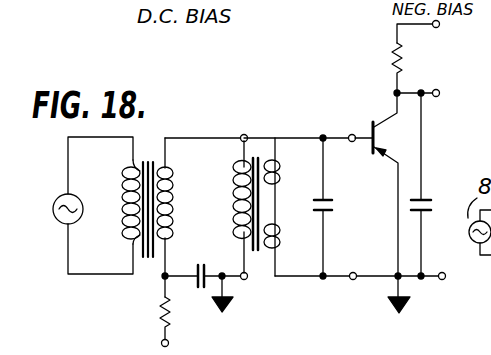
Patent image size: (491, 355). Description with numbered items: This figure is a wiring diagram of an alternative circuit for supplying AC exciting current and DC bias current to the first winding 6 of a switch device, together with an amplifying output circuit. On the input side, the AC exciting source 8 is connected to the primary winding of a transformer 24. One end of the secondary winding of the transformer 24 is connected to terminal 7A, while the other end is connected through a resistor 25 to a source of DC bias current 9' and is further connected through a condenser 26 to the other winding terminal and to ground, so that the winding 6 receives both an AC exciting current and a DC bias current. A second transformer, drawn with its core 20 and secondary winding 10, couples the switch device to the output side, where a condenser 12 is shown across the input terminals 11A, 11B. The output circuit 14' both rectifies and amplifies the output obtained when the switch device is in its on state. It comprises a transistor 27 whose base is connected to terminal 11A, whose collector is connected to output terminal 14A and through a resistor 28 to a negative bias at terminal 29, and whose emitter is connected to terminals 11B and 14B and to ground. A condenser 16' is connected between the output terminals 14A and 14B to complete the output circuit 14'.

The AC exciting source 8 is at (62, 222).
The transformer 24 is at (152, 157).
The resistor 25 is at (161, 313).
The source of DC bias current 9' is at (147, 342).
The terminal 7A is at (253, 116).
The transformer core 20 is at (263, 152).
The first winding 6 is at (237, 197).
The condenser 26 is at (206, 264).
The secondary winding 10 is at (272, 243).
The capacitor 12 is at (334, 206).
The terminal 11A is at (353, 134).
The terminal 11B is at (353, 280).
The transistor 27 is at (374, 152).
The resistor 28 is at (392, 62).
The negative bias terminal 29 is at (435, 28).
The output terminal 14A is at (437, 97).
The output terminal 14B is at (451, 263).
The condenser 16' is at (439, 184).
The output circuit 14' is at (399, 314).